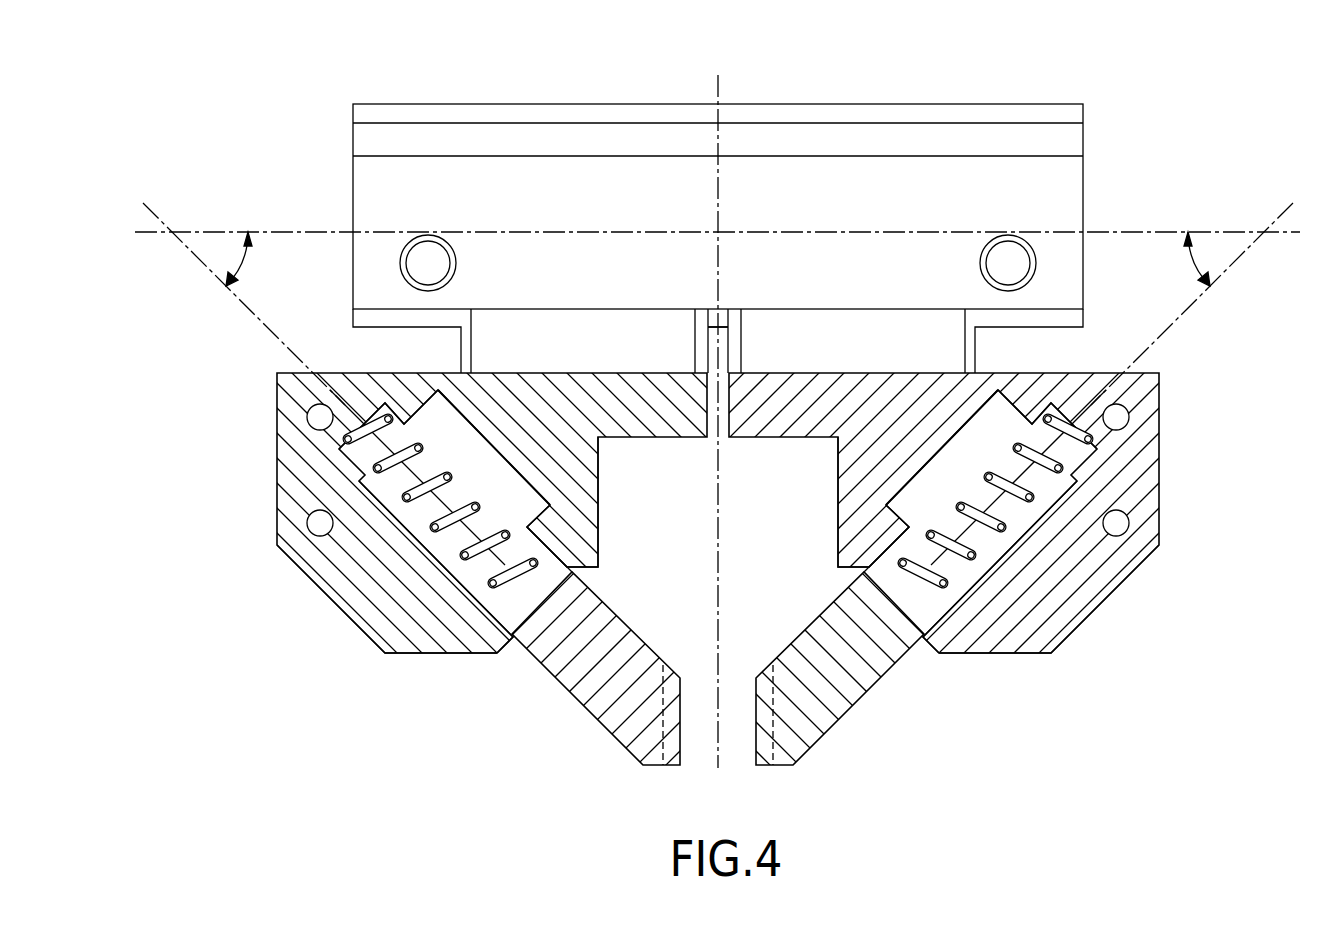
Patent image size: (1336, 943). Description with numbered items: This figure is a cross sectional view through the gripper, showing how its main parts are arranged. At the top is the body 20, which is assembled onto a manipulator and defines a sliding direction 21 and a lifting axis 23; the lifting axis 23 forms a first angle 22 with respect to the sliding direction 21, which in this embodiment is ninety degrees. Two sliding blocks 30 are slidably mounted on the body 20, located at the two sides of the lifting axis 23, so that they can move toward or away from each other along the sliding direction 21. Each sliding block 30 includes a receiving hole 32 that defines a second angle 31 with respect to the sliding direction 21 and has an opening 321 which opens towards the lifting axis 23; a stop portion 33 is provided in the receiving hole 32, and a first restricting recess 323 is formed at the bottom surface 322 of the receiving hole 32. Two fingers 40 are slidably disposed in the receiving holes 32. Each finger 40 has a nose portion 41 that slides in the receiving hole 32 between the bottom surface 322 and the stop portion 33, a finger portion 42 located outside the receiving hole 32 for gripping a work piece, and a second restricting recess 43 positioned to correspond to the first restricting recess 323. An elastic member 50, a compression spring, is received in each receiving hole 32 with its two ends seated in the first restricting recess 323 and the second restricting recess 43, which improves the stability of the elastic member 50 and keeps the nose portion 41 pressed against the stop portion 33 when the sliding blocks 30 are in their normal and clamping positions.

The body 20 is at (930, 100).
The sliding direction 21 is at (1045, 228).
The first angle 22 is at (758, 228).
The lifting axis 23 is at (716, 92).
The sliding block 30 is at (323, 617).
The second angle 31 is at (250, 268).
The receiving hole 32 is at (385, 482).
The opening 321 is at (515, 640).
The bottom surface 322 is at (468, 407).
The first restricting recess 323 is at (372, 403).
The stop portion 33 is at (568, 535).
The finger 40 is at (592, 722).
The nose portion 41 is at (523, 500).
The finger portion 42 is at (672, 740).
The second restricting recess 43 is at (493, 585).
The elastic member 50 is at (420, 497).